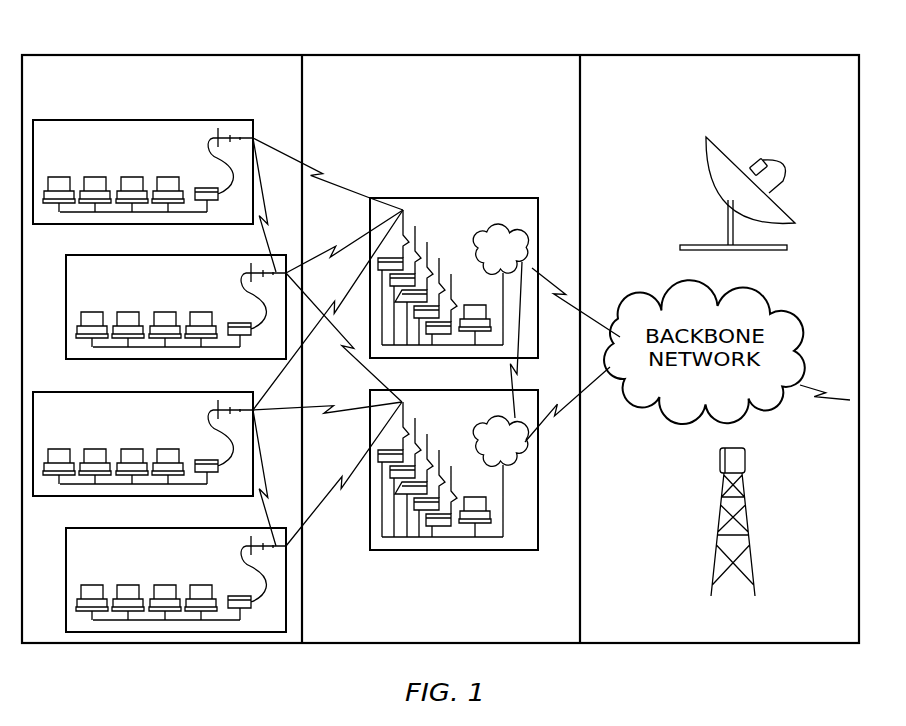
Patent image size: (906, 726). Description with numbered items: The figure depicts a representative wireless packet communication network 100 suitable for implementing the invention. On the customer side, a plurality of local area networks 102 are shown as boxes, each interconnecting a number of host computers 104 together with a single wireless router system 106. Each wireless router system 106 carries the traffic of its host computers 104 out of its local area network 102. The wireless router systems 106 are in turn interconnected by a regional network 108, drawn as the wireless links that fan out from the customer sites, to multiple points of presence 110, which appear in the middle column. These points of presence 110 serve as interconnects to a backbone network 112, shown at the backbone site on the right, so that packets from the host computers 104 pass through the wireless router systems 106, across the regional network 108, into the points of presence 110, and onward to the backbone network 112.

The wireless network 100 is at (223, 53).
The local area network 102 is at (48, 230).
The host computer 104 is at (141, 373).
The wireless router system 106 is at (220, 368).
The regional network 108 is at (277, 143).
The point of presence 110 is at (450, 197).
The backbone network 112 is at (653, 245).